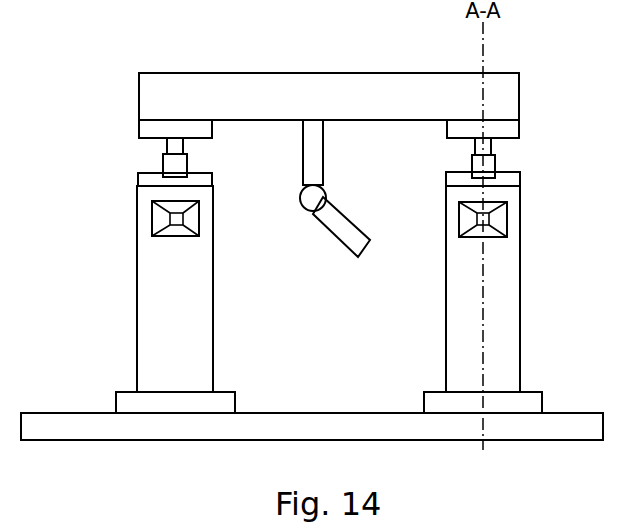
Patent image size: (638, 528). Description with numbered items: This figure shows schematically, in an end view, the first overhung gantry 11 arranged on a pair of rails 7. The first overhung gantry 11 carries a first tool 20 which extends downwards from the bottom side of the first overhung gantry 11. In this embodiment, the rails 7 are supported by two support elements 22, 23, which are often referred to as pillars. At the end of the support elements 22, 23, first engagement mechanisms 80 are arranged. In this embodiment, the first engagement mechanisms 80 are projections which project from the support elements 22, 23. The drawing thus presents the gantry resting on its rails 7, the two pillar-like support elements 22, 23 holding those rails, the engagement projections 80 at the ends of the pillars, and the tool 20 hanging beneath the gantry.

The rails 7 is at (146, 133).
The first overhung gantry 11 is at (410, 88).
The first tool 20 is at (347, 243).
The support element 22 is at (150, 302).
The support element 23 is at (535, 261).
The first engagement mechanisms 80 is at (158, 222).